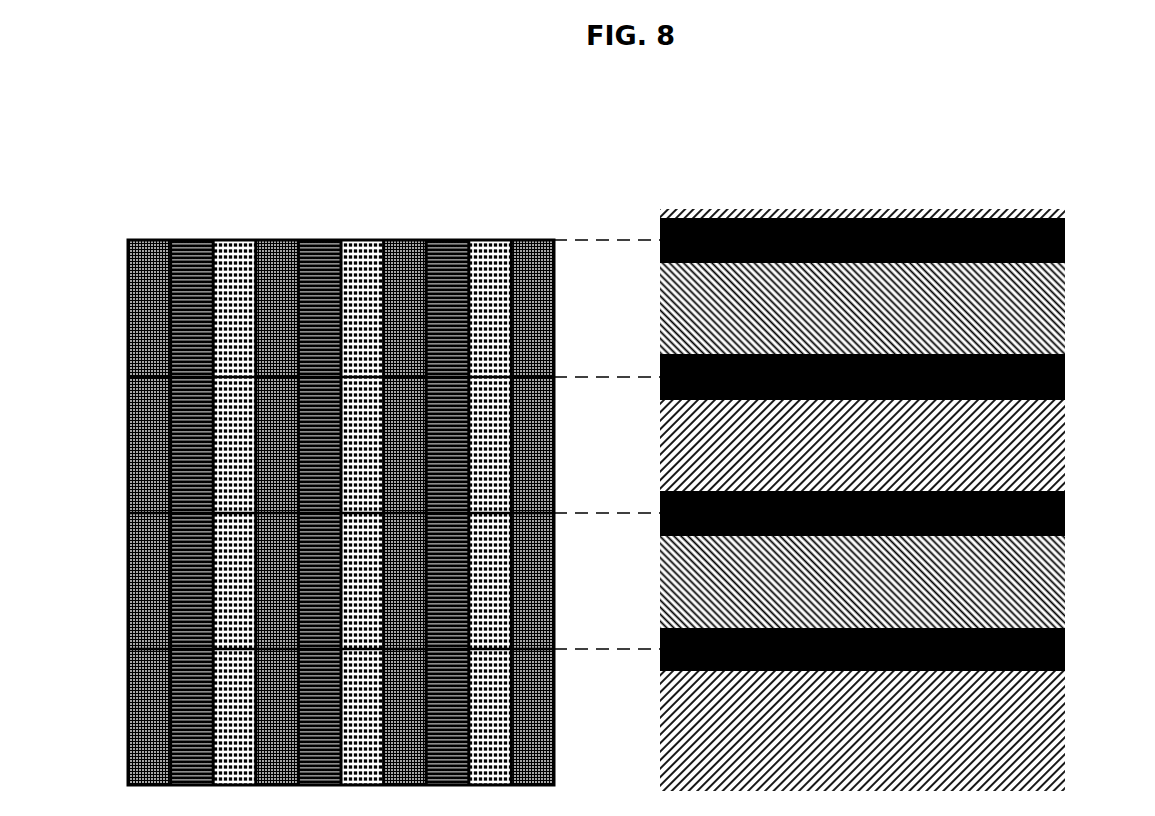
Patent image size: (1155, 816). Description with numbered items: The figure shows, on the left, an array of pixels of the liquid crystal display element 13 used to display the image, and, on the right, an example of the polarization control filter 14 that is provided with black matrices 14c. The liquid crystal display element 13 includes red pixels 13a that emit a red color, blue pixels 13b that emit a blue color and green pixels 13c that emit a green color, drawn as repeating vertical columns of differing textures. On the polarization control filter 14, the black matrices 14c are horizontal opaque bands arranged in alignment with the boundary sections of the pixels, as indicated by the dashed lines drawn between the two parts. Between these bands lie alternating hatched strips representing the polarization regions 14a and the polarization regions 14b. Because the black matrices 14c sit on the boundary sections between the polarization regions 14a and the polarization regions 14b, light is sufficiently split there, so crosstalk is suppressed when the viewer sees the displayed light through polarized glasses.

The liquid crystal display element 13 is at (353, 157).
The red pixels 13a is at (131, 231).
The blue pixels 13b is at (179, 231).
The green pixels 13c is at (228, 231).
The polarization control filter 14 is at (854, 148).
The polarization regions 14a is at (1057, 300).
The polarization regions 14b is at (1057, 436).
The black matrices 14c is at (1057, 232).